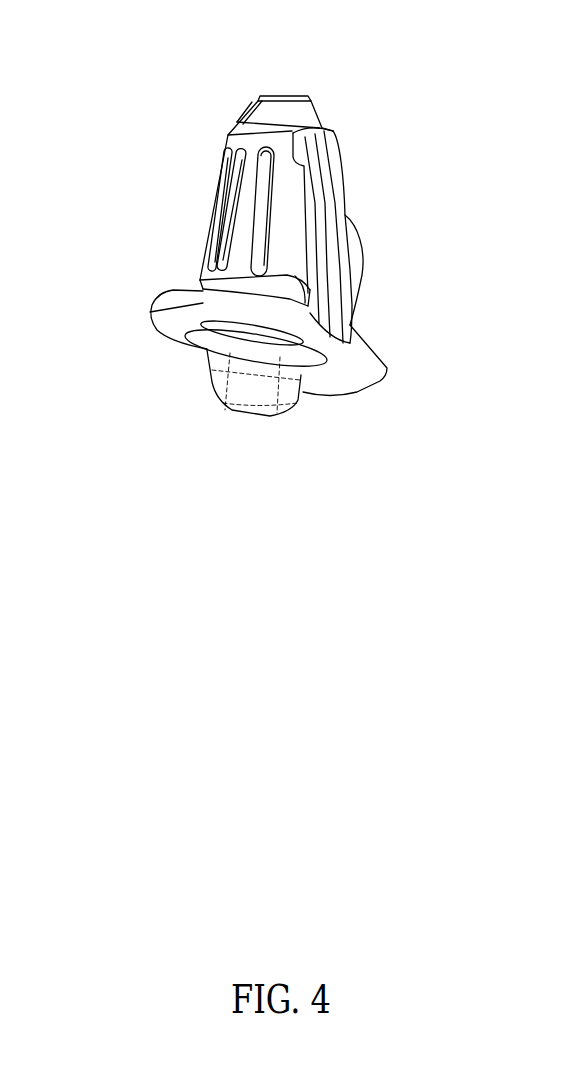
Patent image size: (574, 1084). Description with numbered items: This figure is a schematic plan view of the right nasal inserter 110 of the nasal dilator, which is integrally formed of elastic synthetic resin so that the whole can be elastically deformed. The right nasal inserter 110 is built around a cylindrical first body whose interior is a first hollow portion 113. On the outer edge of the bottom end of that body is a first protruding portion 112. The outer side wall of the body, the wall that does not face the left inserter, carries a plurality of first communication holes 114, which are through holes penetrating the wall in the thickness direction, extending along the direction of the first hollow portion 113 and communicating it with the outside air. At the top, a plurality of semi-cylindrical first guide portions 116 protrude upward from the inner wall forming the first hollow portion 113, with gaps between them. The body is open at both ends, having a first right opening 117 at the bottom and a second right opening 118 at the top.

The right nasal inserter 110 is at (358, 40).
The first protruding portion 112 is at (175, 462).
The first hollow portion 113 is at (245, 491).
The first communication holes 114 is at (265, 255).
The first guide portions 116 is at (355, 97).
The first right opening 117 is at (128, 400).
The second right opening 118 is at (289, 96).